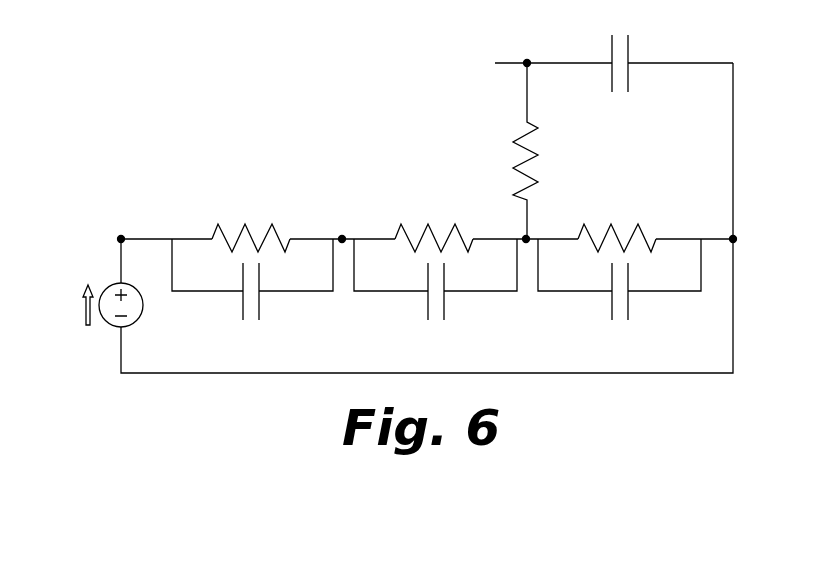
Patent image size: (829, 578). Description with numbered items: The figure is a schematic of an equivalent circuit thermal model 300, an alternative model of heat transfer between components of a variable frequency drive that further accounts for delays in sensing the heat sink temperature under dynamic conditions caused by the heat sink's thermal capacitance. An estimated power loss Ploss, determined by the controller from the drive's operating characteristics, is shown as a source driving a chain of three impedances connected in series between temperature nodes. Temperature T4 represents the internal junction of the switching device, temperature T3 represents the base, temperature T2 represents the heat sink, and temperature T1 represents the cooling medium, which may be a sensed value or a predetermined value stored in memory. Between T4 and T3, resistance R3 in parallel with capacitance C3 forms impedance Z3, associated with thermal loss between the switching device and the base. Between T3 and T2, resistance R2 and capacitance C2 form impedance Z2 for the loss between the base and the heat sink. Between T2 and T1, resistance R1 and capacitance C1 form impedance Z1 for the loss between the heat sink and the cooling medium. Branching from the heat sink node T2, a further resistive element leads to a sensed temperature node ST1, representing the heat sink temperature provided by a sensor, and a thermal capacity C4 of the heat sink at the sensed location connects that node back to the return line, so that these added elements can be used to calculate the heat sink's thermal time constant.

The equivalent circuit thermal model 300 is at (92, 163).
The temperature T1 is at (717, 218).
The temperature T2 is at (542, 219).
The temperature T3 is at (339, 218).
The temperature T4 is at (119, 218).
The sensed temperature value ST1 is at (495, 143).
The resistance R1 is at (617, 222).
The resistance R2 is at (434, 222).
The resistance R3 is at (251, 222).
The capacitance C1 is at (641, 292).
The capacitance C2 is at (455, 294).
The capacitance C3 is at (271, 294).
The thermal capacity C4 is at (620, 48).
The impedance Z1 is at (619, 277).
The impedance Z2 is at (435, 277).
The impedance Z3 is at (252, 277).
The estimated power loss Ploss is at (86, 283).